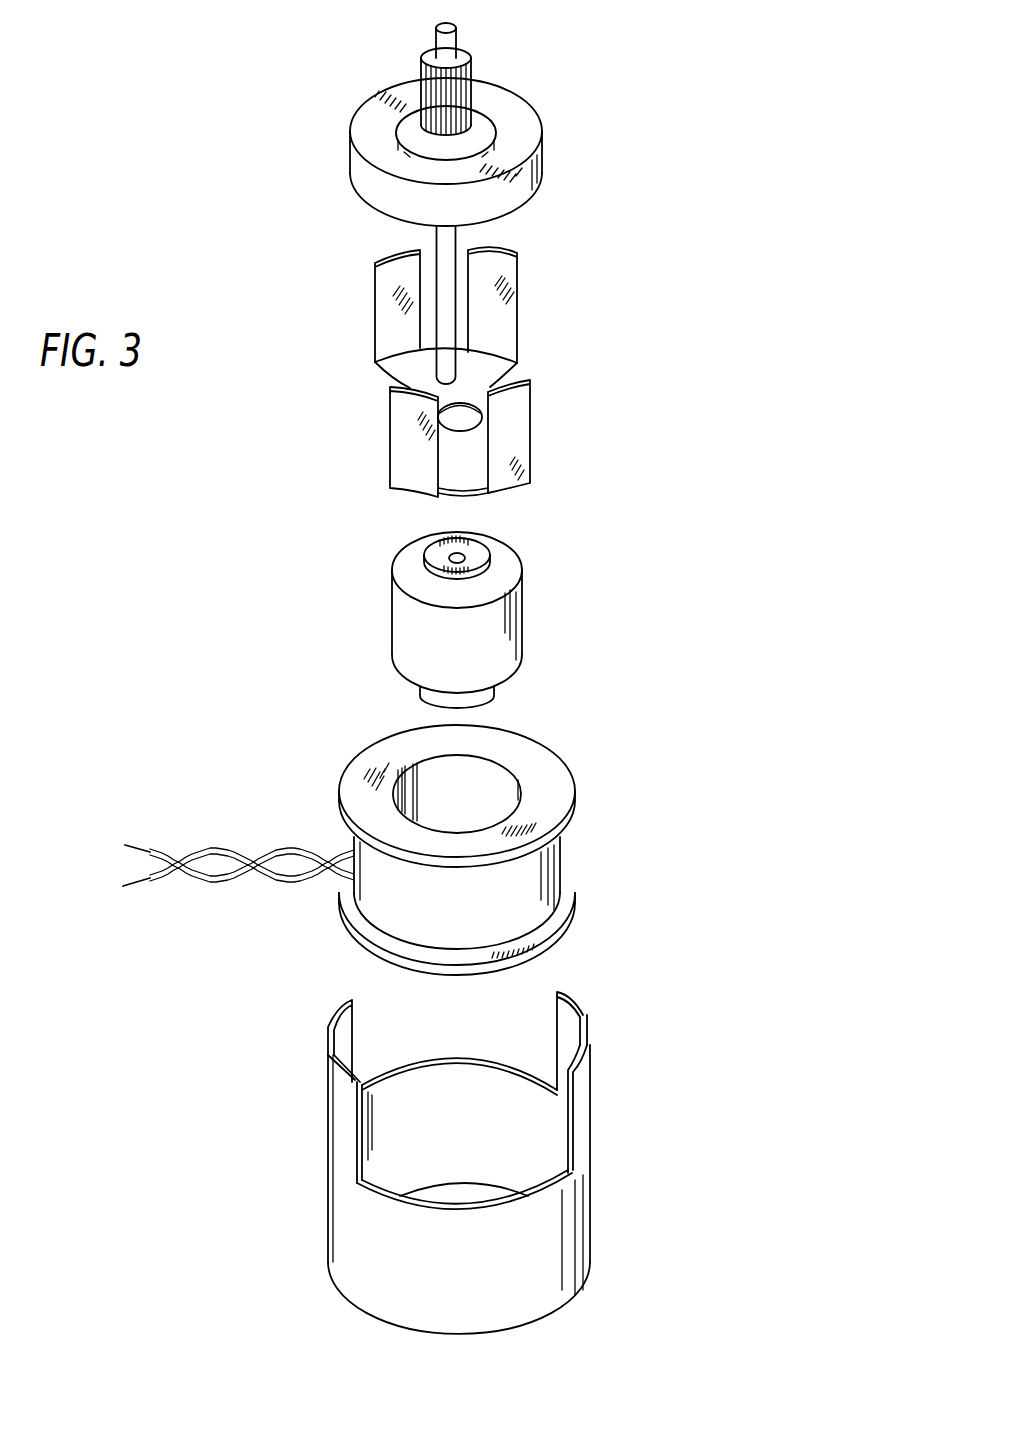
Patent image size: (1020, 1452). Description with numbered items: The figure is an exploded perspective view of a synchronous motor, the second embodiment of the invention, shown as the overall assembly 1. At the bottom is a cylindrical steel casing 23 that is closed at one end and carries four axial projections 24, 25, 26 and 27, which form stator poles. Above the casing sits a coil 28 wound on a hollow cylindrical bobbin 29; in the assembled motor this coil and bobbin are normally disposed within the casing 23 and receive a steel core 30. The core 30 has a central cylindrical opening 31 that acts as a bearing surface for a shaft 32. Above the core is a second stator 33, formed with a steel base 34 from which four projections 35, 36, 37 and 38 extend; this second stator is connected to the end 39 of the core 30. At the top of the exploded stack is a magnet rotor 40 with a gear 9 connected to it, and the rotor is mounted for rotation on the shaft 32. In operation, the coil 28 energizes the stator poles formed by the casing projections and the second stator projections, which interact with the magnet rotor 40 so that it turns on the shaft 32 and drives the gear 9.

The rotary actuator 1 is at (742, 672).
The gear 9 is at (433, 88).
The cylindrical steel casing 23 is at (553, 1219).
The axial projection 24 is at (580, 1103).
The axial projection 25 is at (590, 1003).
The axial projection 26 is at (335, 1018).
The axial projection 27 is at (345, 1093).
The coil 28 is at (525, 897).
The hollow cylindrical bobbin 29 is at (545, 767).
The steel core 30 is at (418, 655).
The central cylindrical opening 31 is at (460, 558).
The shaft 32 is at (448, 40).
The second stator 33 is at (658, 309).
The steel base 34 is at (485, 367).
The projection 35 is at (520, 428).
The projection 36 is at (513, 283).
The projection 37 is at (385, 284).
The projection 38 is at (407, 462).
The end 39 is at (428, 560).
The magnet rotor 40 is at (372, 186).